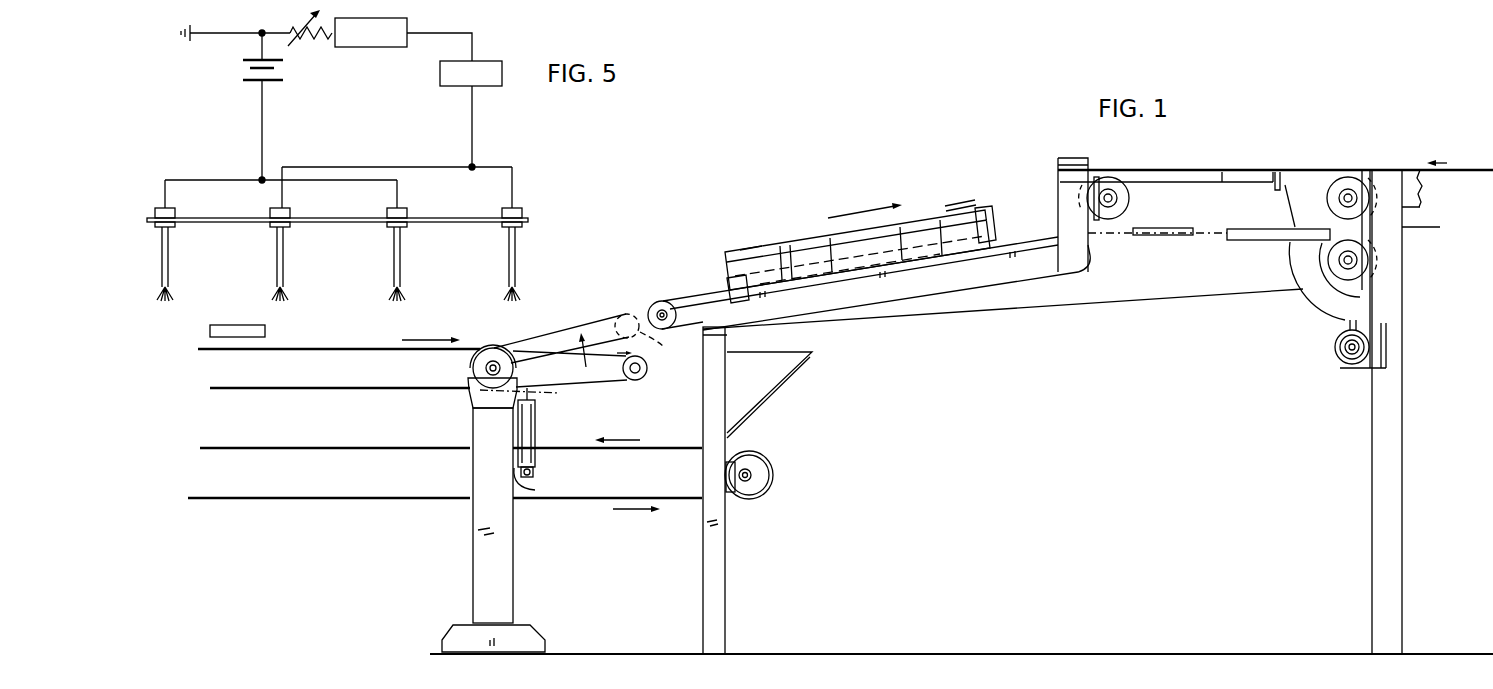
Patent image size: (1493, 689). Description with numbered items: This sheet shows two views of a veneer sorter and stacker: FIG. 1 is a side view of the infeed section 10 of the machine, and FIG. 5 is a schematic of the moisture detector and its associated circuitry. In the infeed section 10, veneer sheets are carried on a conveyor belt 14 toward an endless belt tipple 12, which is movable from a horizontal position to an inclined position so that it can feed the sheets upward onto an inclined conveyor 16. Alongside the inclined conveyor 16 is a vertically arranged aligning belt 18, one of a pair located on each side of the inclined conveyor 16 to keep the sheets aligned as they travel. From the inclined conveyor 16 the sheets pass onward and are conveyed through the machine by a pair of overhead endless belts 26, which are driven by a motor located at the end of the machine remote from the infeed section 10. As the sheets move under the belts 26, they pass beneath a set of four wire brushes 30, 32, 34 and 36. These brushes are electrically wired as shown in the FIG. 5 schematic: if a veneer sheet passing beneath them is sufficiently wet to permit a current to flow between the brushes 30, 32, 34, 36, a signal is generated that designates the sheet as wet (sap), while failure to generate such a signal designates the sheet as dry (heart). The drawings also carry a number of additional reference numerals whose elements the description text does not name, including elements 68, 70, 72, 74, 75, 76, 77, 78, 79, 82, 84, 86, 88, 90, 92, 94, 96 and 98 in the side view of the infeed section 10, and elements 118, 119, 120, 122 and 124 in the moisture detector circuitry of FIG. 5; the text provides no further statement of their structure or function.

In FIG. 1, the infeed section 10 is at (762, 189).
In FIG. 1, the endless belt tipple 12 is at (612, 390).
In FIG. 1, the conveyor belt 14 is at (345, 347).
In FIG. 1, the inclined conveyor 16 is at (653, 298).
In FIG. 1, the aligning belt 18 is at (770, 252).
In FIG. 1, the overhead endless belts 26 is at (1420, 170).
In FIG. 5, the wire brush 30 is at (162, 290).
In FIG. 1, the wire brush 30 is at (1290, 204).
In FIG. 5, the wire brush 32 is at (275, 290).
In FIG. 5, the wire brush 34 is at (392, 292).
In FIG. 5, the wire brush 36 is at (508, 292).
In FIG. 1, the detector 68 is at (210, 326).
In FIG. 1, the return conveyor belt 70 is at (318, 447).
In FIG. 1, the actuating cylinder 72 is at (534, 419).
In FIG. 1, the pivot roller assembly 74 is at (495, 362).
In FIG. 1, the support pillar 75 is at (473, 575).
In FIG. 1, the pivot arm 76 is at (632, 381).
In FIG. 1, the drive roller 77 is at (472, 362).
In FIG. 1, the conveyor belt 78 is at (720, 292).
In FIG. 1, the arm roller 79 is at (647, 370).
In FIG. 1, the arm roller 82 is at (653, 330).
In FIG. 1, the belt roller 84 is at (1318, 297).
In FIG. 1, the support post 86 is at (725, 590).
In FIG. 1, the support post 88 is at (1372, 560).
In FIG. 1, the lower roller 90 is at (1333, 357).
In FIG. 1, the package end plate 92 is at (730, 272).
In FIG. 1, the package end plate 94 is at (988, 235).
In FIG. 1, the upper roller 96 is at (1122, 182).
In FIG. 1, the upper roller 98 is at (1350, 178).
In FIG. 5, the support bar 118 is at (445, 217).
In FIG. 5, the battery 119 is at (241, 70).
In FIG. 5, the relay 120 is at (383, 47).
In FIG. 5, the amplifier 122 is at (480, 87).
In FIG. 5, the variable resistor 124 is at (307, 44).